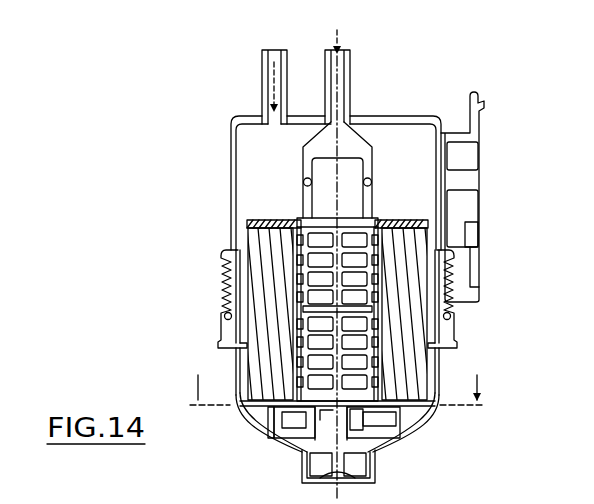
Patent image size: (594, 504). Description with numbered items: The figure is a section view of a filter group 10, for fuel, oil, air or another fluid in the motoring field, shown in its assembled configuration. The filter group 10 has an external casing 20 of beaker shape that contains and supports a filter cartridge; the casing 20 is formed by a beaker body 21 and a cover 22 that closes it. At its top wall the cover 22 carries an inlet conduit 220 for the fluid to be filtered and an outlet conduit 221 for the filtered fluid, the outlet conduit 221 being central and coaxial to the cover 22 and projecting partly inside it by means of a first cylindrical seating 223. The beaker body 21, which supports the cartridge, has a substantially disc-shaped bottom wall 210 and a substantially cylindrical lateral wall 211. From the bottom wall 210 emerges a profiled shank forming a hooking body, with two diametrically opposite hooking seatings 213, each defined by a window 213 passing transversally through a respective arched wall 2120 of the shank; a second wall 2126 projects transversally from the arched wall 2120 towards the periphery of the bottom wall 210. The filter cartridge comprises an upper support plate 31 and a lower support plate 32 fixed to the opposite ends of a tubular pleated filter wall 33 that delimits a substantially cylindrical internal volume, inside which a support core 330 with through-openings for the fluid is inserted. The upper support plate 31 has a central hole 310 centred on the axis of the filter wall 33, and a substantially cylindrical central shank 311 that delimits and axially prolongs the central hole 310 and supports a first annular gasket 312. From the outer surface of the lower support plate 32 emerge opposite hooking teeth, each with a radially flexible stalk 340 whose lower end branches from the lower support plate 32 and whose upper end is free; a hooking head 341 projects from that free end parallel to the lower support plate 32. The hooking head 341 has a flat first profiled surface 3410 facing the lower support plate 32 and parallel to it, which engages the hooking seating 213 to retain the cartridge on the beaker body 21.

The filter group 10 is at (66, 503).
The external casing 20 is at (300, 248).
The beaker body 21 is at (440, 418).
The cover 22 is at (450, 130).
The upper support plate 31 is at (386, 244).
The lower support plate 32 is at (272, 399).
The filter wall 33 is at (407, 300).
The bottom wall 210 is at (430, 448).
The lateral wall 211 is at (440, 363).
The hooking seating 213 is at (290, 430).
The inlet conduit 220 is at (262, 83).
The outlet conduit 221 is at (352, 95).
The first cylindrical seating 223 is at (300, 152).
The central hole 310 is at (345, 222).
The central shank 311 is at (370, 205).
The first annular gasket 312 is at (450, 162).
The support core 330 is at (460, 282).
The stalk 340 is at (262, 410).
The hooking head 341 is at (265, 423).
The arched wall 2120 is at (303, 435).
The second wall 2126 is at (370, 478).
The first profiled surface 3410 is at (432, 455).